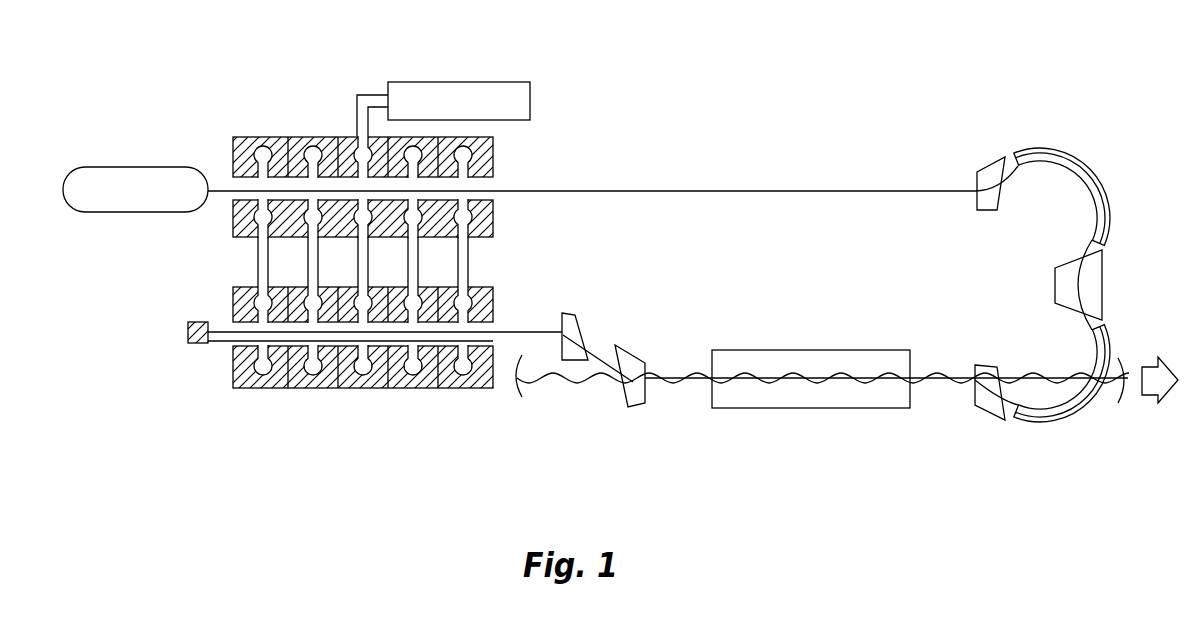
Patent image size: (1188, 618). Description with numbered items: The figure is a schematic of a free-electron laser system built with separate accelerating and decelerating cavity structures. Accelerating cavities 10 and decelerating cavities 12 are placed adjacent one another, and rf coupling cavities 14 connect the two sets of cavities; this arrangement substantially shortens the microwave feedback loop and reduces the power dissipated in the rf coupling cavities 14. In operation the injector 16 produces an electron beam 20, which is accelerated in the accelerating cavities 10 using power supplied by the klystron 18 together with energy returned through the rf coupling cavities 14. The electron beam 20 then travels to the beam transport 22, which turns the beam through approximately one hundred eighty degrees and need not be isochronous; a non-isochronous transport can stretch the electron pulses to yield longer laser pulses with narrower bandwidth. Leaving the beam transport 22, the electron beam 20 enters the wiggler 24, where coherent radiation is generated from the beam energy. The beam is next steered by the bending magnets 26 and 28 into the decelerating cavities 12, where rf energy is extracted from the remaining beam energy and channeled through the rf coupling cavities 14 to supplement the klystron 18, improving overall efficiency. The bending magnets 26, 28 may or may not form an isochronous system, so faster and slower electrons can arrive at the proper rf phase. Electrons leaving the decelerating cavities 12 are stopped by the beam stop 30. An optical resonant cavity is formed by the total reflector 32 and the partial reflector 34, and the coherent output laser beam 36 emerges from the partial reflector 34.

The accelerating cavities 10 is at (257, 137).
The decelerating cavities 12 is at (310, 388).
The rf coupling cavities 14 is at (257, 260).
The injector 16 is at (163, 167).
The klystron 18 is at (505, 82).
The electron beam 20 is at (647, 190).
The beam transport 22 is at (1081, 158).
The wiggler 24 is at (852, 408).
The bending magnet 26 is at (648, 405).
The bending magnet 28 is at (578, 328).
The beam stop 30 is at (188, 343).
The total reflector 32 is at (518, 395).
The partial reflector 34 is at (1120, 403).
The coherent output laser beam 36 is at (1155, 367).